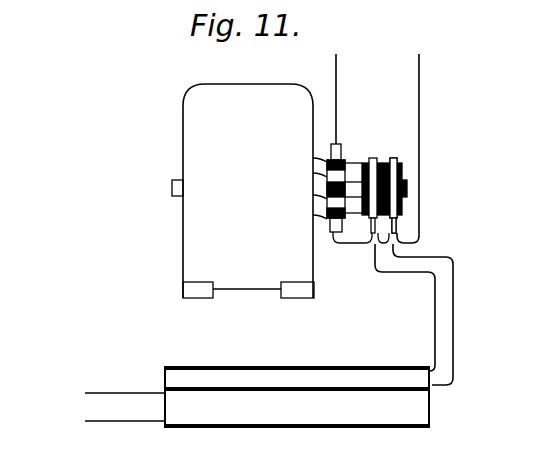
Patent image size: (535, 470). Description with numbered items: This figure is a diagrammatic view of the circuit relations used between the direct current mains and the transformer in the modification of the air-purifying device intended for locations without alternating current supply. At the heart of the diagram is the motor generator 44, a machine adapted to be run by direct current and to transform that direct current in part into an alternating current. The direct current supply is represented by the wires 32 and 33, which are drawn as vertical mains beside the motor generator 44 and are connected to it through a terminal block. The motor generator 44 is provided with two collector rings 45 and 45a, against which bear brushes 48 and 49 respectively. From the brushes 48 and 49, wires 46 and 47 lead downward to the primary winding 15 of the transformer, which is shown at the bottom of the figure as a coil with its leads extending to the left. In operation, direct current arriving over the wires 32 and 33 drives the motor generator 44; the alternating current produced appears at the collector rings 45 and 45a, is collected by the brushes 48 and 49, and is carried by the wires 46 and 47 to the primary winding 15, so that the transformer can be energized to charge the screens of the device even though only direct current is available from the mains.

The primary winding 15 is at (177, 377).
The wire 32 is at (336, 75).
The wire 33 is at (419, 78).
The motor generator 44 is at (193, 228).
The collector ring 45 is at (372, 158).
The collector ring 45a is at (393, 157).
The wire 46 is at (432, 313).
The wire 47 is at (453, 293).
The brush 48 is at (351, 194).
The brush 49 is at (398, 226).